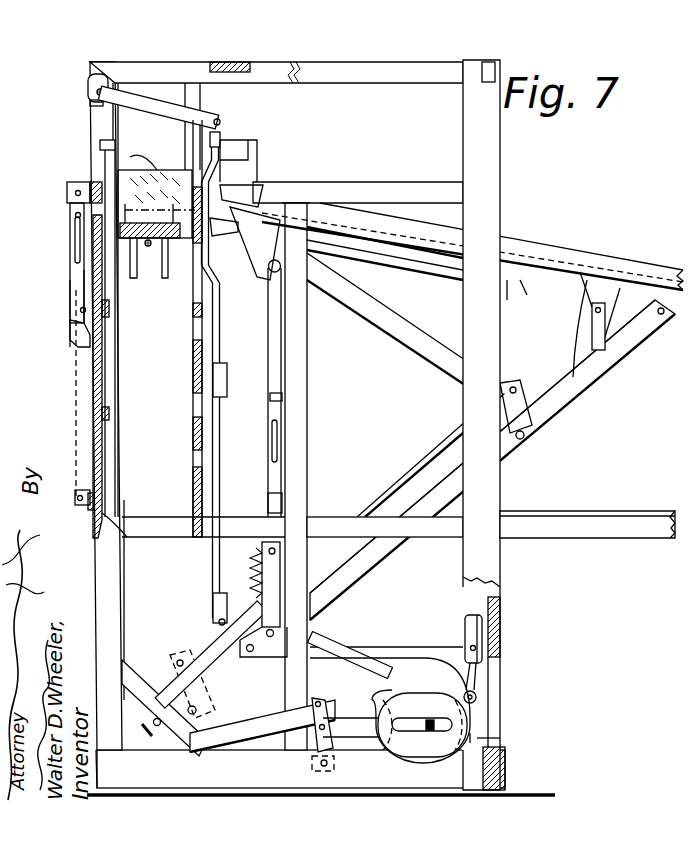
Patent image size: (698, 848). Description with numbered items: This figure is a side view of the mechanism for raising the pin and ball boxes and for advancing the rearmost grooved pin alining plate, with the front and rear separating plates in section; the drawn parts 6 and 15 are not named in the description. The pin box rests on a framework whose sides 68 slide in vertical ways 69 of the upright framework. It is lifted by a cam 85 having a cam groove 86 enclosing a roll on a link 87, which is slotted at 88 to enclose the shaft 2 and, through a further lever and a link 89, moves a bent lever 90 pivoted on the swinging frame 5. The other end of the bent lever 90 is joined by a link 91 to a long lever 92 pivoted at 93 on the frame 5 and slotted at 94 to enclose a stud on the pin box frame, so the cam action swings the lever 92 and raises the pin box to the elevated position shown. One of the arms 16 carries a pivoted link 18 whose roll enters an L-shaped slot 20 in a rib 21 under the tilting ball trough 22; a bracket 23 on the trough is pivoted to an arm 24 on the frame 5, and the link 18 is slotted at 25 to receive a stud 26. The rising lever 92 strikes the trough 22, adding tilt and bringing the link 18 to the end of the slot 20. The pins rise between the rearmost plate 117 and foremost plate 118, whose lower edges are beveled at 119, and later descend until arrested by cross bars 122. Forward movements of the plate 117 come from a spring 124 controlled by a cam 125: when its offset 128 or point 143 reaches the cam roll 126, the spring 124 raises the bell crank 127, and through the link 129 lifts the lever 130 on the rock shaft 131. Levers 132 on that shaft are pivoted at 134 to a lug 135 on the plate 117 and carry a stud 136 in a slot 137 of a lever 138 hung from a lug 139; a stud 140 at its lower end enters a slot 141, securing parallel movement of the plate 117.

The shaft 2 is at (435, 730).
The frame 5 is at (372, 560).
The bracket 6 is at (238, 140).
The lever 15 is at (350, 652).
The arm 16 is at (313, 610).
The link 18 is at (270, 357).
The L-shaped slot 20 is at (363, 242).
The rib 21 is at (513, 287).
The tilting trough 22 is at (530, 247).
The bracket 23 is at (588, 295).
The arm 24 is at (590, 352).
The slot 25 is at (277, 442).
The stud 26 is at (270, 460).
The sides 68 is at (182, 173).
The vertical ways 69 is at (190, 85).
The cam 85 is at (377, 747).
The cam groove 86 is at (372, 712).
The link 87 is at (340, 723).
The slot 88 is at (403, 688).
The link 89 is at (263, 720).
The bent lever 90 is at (185, 682).
The link 91 is at (457, 436).
The lever 92 is at (383, 327).
The pivot 93 is at (526, 437).
The slot 94 is at (156, 216).
The rearmost grooved plate 117 is at (103, 383).
The foremost grooved plate 118 is at (190, 367).
The beveled lower edges 119 is at (128, 537).
The cross bars 122 is at (103, 303).
The spring 124 is at (242, 573).
The cam 125 is at (500, 738).
The cam roll 126 is at (478, 702).
The bell crank 127 is at (415, 648).
The offset 128 is at (476, 692).
The link 129 is at (217, 153).
The lever 130 is at (143, 97).
The rock shaft 131 is at (92, 96).
The levers 132 is at (107, 150).
The pivot 134 is at (78, 496).
The lug 135 is at (98, 516).
The stud 136 is at (122, 212).
The slot 137 is at (72, 238).
The lever 138 is at (77, 260).
The lug 139 is at (72, 185).
The stud 140 is at (82, 308).
The slot 141 is at (82, 285).
The point 143 is at (82, 323).